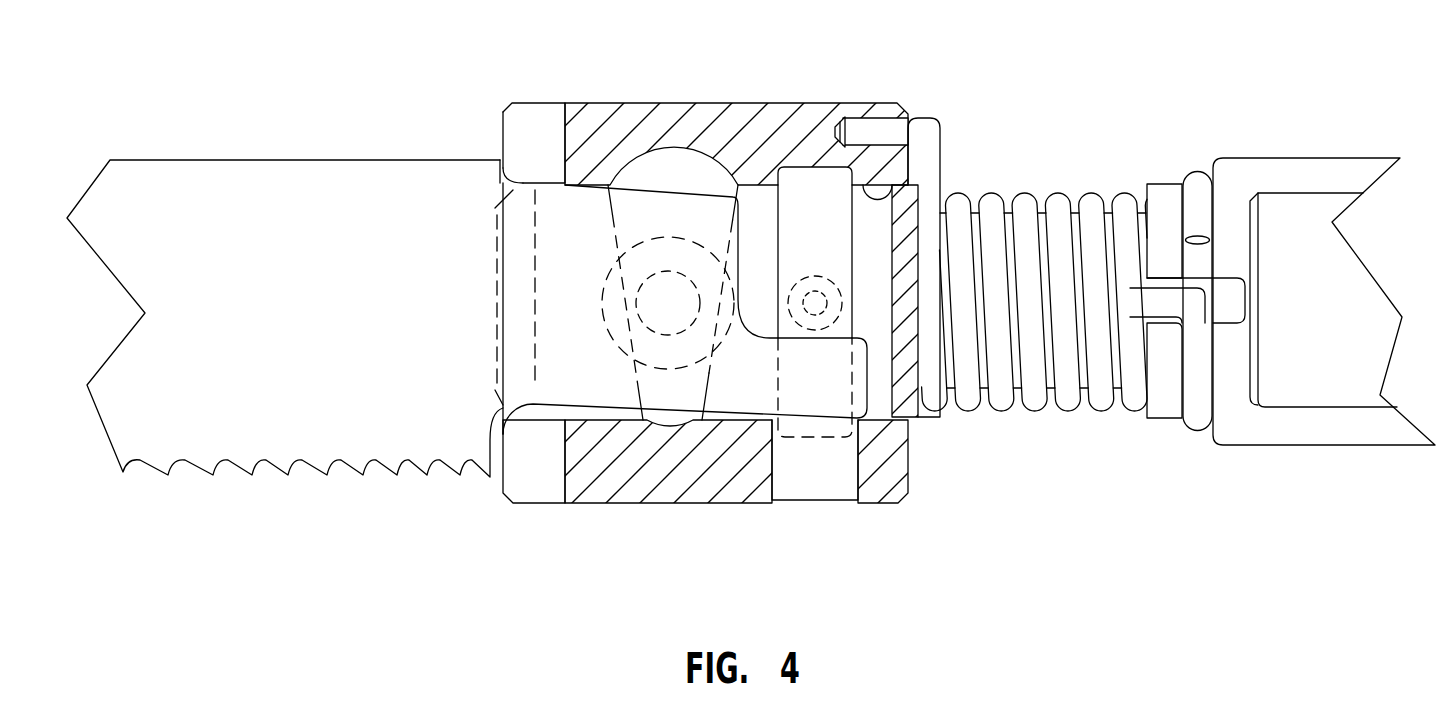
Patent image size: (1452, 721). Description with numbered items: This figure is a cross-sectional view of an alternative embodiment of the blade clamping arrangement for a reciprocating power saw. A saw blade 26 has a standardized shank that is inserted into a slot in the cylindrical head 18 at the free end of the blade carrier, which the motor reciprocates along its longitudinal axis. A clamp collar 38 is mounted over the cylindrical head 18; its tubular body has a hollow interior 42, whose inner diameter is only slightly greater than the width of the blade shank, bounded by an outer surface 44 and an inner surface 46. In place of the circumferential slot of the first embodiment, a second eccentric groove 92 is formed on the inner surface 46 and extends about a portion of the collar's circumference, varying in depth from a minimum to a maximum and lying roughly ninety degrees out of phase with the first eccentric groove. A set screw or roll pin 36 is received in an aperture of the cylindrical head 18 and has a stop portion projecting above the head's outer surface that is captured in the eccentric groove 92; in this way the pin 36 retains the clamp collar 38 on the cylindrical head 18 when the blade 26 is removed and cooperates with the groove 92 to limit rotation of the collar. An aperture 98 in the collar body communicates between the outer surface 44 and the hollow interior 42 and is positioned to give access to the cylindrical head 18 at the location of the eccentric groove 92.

The saw blade 26 is at (237, 172).
The cylindrical head 18 is at (520, 230).
The clamp collar 38 is at (565, 490).
The outer surface 44 is at (670, 503).
The hollow interior 42 is at (757, 230).
The stop pin 36 is at (813, 277).
The second eccentric groove 92 is at (832, 195).
The inner surface 46 is at (913, 192).
The aperture 98 is at (828, 477).